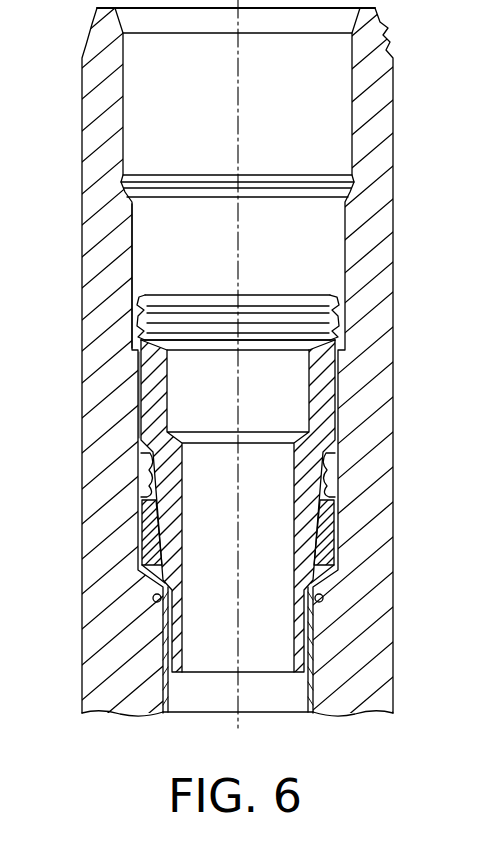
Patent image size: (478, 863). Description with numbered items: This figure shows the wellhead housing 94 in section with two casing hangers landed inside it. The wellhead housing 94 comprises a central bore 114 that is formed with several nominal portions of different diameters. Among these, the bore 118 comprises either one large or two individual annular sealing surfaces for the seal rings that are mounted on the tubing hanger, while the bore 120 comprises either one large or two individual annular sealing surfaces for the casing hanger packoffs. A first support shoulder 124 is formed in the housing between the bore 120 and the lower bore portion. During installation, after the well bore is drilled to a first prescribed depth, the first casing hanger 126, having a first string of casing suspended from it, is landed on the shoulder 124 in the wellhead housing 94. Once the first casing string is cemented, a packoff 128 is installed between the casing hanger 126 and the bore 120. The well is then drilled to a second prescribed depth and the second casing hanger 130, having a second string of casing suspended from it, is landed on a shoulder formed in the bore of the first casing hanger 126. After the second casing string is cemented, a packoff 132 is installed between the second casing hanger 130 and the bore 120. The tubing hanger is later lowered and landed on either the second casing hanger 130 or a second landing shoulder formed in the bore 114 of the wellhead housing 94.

The wellhead housing 94 is at (396, 160).
The central bore 114 is at (164, 129).
The bore 118 is at (140, 232).
The bore 120 is at (141, 426).
The first support shoulder 124 is at (327, 597).
The first casing hanger 126 is at (330, 573).
The packoff 128 is at (335, 493).
The second casing hanger 130 is at (337, 425).
The packoff 132 is at (339, 313).